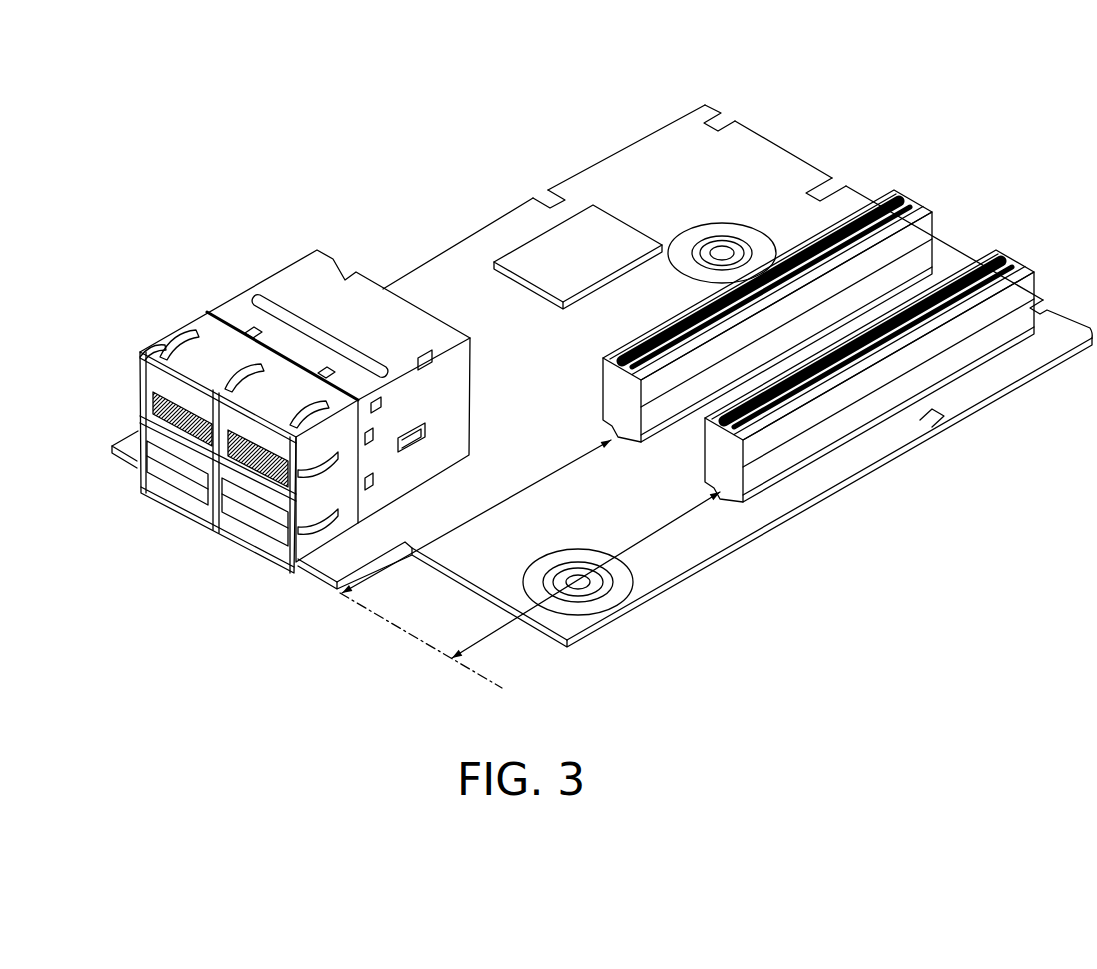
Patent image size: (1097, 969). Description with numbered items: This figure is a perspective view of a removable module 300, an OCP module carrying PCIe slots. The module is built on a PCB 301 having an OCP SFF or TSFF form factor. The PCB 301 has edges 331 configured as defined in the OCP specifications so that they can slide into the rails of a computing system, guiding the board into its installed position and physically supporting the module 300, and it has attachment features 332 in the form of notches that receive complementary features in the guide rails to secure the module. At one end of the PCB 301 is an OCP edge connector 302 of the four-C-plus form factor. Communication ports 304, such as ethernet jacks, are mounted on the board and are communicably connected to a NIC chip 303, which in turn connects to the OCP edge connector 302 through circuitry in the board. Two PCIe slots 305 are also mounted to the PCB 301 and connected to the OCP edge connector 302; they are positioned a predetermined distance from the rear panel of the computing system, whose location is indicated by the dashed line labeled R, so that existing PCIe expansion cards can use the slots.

The removable module 300 is at (405, 98).
The PCB 301 is at (447, 290).
The OCP edge connector 302 is at (763, 157).
The NIC chip 303 is at (605, 255).
The communication ports 304 is at (230, 303).
The PCIe slots 305 is at (690, 360).
The edges 331 is at (658, 128).
The attachment features 332 is at (550, 203).